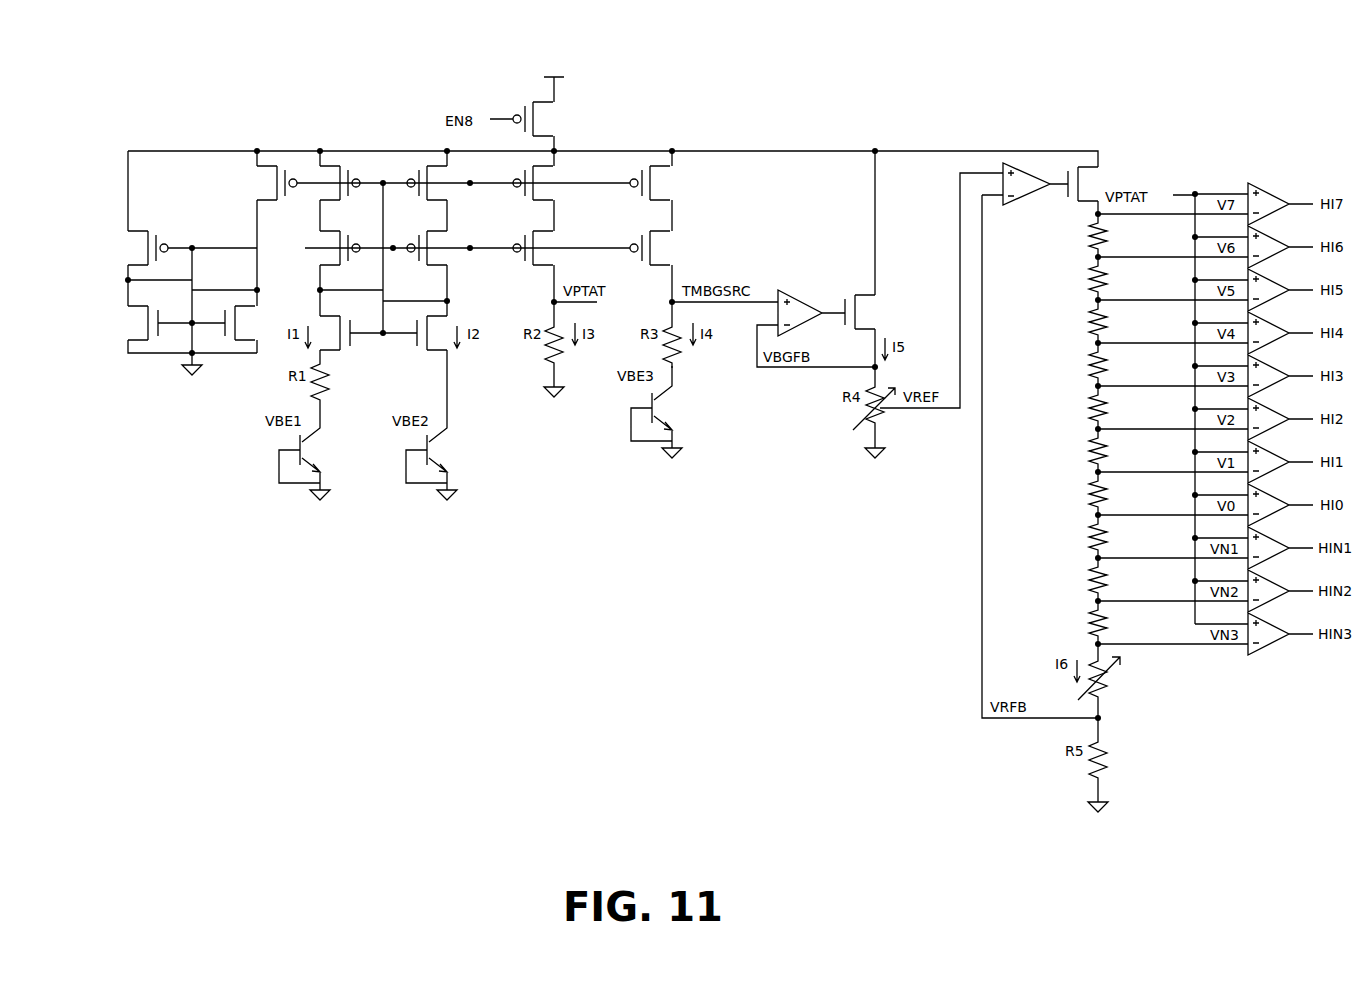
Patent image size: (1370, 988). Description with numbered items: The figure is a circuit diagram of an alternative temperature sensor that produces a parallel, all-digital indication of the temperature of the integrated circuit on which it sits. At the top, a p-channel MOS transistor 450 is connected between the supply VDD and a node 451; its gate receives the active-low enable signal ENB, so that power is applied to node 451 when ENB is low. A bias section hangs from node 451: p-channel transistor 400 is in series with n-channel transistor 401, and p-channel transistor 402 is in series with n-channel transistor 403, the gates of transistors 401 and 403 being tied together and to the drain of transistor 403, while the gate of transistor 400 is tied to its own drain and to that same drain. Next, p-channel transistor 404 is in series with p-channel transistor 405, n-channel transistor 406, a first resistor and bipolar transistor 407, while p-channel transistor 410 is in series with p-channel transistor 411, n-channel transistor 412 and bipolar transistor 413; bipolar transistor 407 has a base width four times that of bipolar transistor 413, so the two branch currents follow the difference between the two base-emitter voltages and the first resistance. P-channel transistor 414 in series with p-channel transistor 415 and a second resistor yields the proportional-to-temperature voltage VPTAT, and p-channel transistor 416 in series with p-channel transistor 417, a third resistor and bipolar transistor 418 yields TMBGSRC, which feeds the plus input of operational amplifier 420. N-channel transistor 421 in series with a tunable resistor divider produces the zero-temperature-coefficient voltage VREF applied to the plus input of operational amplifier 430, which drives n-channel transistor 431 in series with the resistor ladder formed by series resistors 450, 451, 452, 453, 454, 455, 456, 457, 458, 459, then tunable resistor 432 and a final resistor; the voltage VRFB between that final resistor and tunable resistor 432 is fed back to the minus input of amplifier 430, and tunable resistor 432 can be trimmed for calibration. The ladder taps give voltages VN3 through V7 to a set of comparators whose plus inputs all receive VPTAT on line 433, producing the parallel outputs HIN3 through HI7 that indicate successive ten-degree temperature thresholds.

The p-channel MOS transistor 400 is at (140, 228).
The n-channel MOS transistor 401 is at (138, 330).
The p-channel MOS transistor 402 is at (277, 166).
The n-channel MOS transistor 403 is at (240, 340).
The p-channel MOS transistor 404 is at (338, 168).
The p-channel MOS transistor 405 is at (342, 249).
The n-channel MOS transistor 406 is at (342, 345).
The bipolar transistor 407 is at (292, 476).
The p-channel MOS transistor 410 is at (428, 167).
The p-channel MOS transistor 411 is at (428, 246).
The n-channel MOS transistor 412 is at (447, 352).
The bipolar transistor 413 is at (437, 468).
The p-channel MOS transistor 414 is at (530, 182).
The p-channel MOS transistor 415 is at (535, 246).
The p-channel MOS transistor 416 is at (660, 168).
The p-channel MOS transistor 417 is at (655, 248).
The bipolar transistor 418 is at (655, 418).
The operational amplifier 420 is at (803, 313).
The n-channel MOS transistor 421 is at (857, 292).
The operational amplifier 430 is at (1018, 186).
The n-channel MOS transistor 431 is at (1084, 172).
The tunable resistor 432 is at (1105, 680).
The line 433 is at (1172, 200).
The p-channel MOS transistor 450 is at (535, 100).
The node 451 is at (556, 150).
The ladder resistor 452 is at (1090, 326).
The ladder resistor 453 is at (1090, 369).
The ladder resistor 454 is at (1090, 412).
The ladder resistor 455 is at (1090, 455).
The ladder resistor 456 is at (1090, 498).
The ladder resistor 457 is at (1090, 541).
The ladder resistor 458 is at (1090, 584).
The ladder resistor 459 is at (1090, 627).